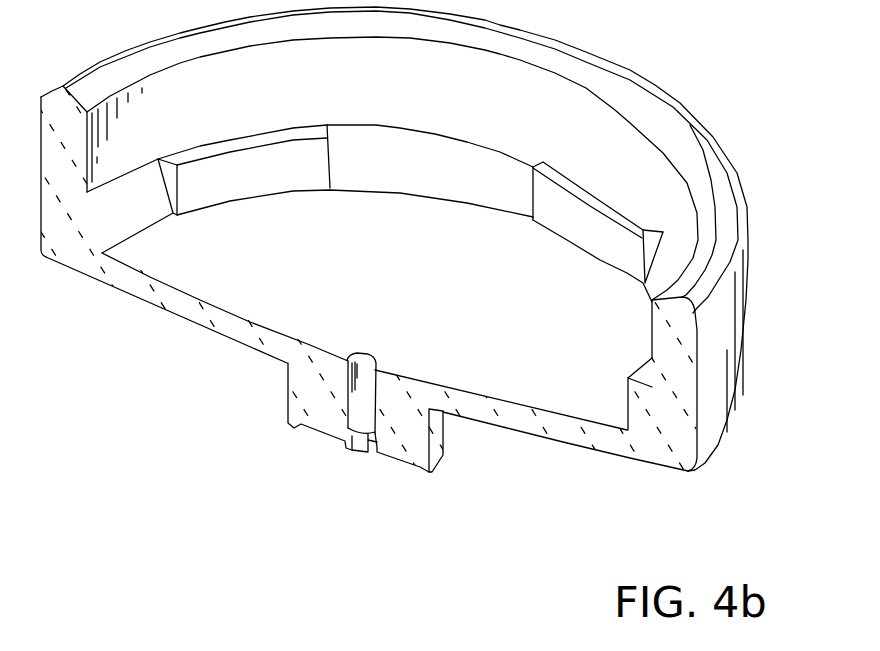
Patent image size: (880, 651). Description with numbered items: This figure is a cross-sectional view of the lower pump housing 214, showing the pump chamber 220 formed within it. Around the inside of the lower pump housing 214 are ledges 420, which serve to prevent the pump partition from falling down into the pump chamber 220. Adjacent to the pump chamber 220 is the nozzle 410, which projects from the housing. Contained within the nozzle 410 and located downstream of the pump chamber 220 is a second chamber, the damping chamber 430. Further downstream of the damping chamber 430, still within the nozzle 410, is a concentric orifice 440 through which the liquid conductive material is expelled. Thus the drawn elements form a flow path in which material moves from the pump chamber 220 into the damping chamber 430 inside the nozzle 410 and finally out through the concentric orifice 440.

The lower pump housing 214 is at (723, 312).
The pump chamber 220 is at (487, 232).
The ledges 420 is at (193, 147).
The damping chamber 430 is at (354, 352).
The concentric orifice 440 is at (358, 452).
The nozzle 410 is at (443, 450).